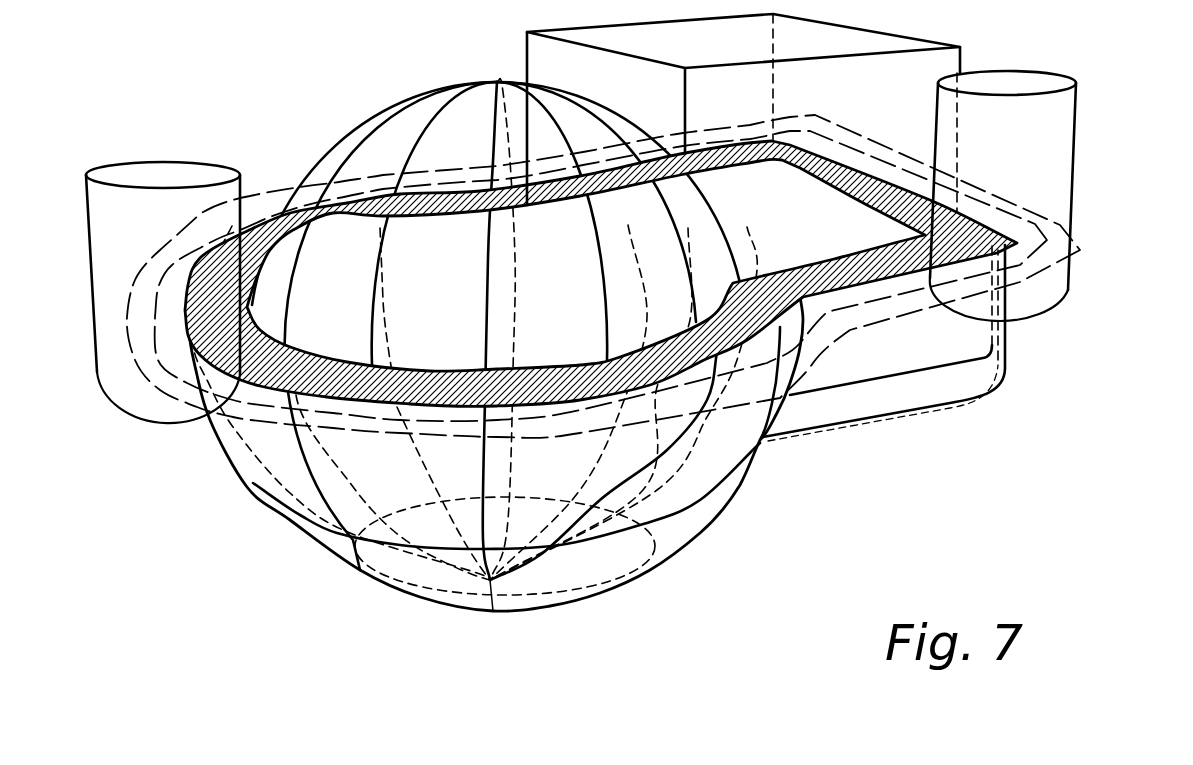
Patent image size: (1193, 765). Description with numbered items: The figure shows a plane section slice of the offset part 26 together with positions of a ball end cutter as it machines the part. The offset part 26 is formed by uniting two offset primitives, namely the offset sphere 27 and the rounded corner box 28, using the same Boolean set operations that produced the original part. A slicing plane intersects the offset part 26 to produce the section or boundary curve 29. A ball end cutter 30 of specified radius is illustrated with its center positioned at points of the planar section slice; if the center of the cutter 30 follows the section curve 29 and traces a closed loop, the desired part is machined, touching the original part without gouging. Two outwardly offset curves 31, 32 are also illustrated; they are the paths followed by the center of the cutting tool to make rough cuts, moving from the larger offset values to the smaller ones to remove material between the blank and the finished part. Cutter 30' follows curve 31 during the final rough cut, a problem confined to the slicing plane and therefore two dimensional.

The offset part 26 is at (1015, 335).
The offset sphere 27 is at (257, 483).
The rounded corner box 28 is at (878, 407).
The section curve 29 is at (382, 407).
The ball end cutter 30 is at (1046, 196).
The ball end cutter 30' is at (130, 292).
The outwardly offset curve 31 is at (427, 423).
The outwardly offset curve 32 is at (453, 440).